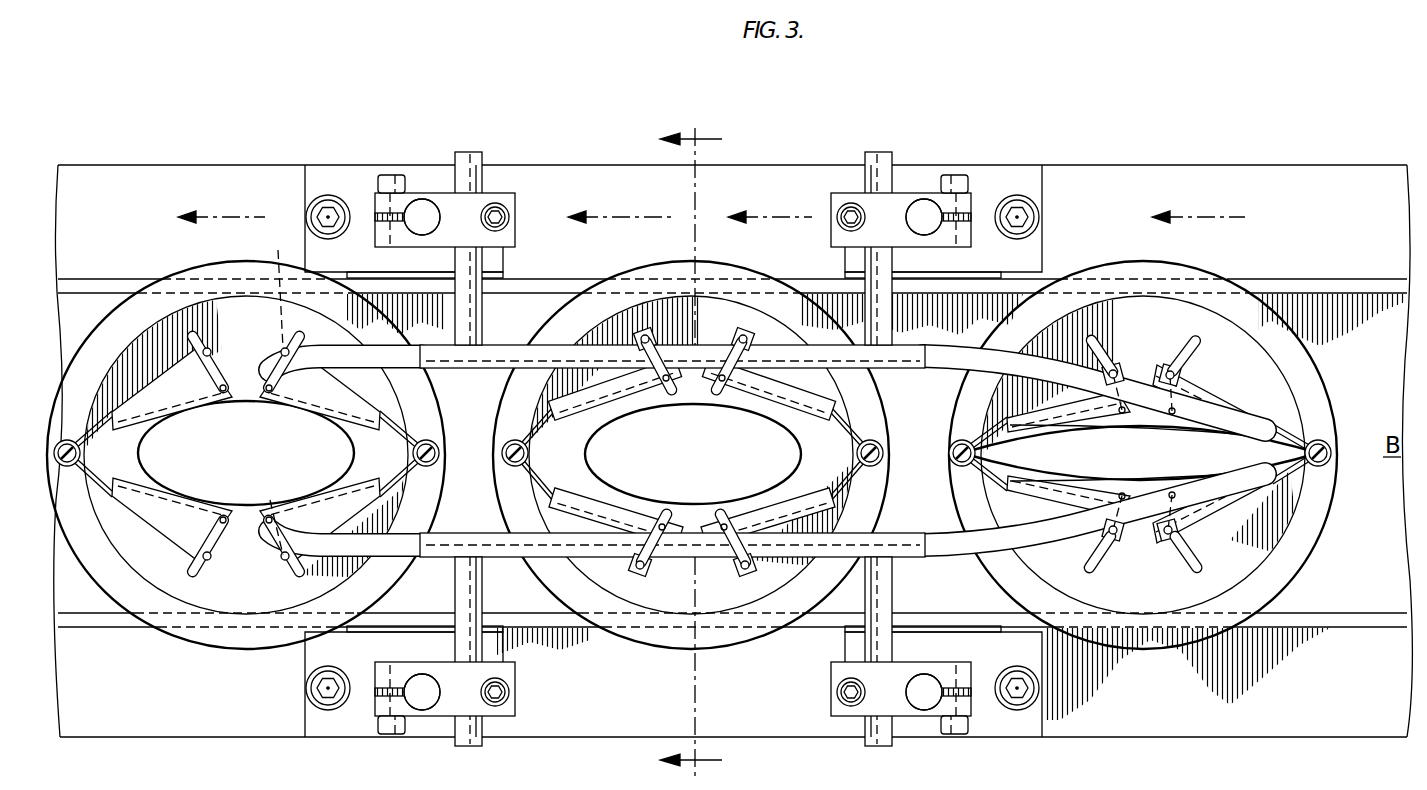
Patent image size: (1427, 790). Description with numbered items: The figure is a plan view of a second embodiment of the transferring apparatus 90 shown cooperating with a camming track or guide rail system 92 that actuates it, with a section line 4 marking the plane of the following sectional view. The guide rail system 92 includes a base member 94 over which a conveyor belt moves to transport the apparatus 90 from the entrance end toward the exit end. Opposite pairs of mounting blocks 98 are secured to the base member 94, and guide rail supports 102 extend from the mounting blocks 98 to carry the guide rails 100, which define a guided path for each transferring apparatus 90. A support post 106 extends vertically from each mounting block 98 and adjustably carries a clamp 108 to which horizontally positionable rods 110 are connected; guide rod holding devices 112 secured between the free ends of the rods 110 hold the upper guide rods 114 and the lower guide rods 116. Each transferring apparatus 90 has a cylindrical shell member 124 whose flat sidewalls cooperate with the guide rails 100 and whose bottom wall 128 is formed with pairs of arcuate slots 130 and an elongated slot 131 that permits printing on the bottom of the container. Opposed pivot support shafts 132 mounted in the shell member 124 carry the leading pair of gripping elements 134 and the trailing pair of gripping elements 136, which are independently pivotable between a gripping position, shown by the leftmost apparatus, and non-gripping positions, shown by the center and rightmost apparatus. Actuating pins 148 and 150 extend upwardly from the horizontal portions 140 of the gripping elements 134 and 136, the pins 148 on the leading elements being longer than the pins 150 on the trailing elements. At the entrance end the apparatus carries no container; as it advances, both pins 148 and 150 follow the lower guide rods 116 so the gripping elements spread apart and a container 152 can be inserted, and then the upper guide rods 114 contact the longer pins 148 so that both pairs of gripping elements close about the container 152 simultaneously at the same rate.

The section line 4- 4 is at (684, 454).
The transferring apparatus 90 is at (719, 452).
The guide rail system 92 is at (733, 416).
The base member 94 is at (1272, 165).
The mounting blocks 98 is at (1012, 167).
The guide rails 100 is at (1345, 300).
The guide rail supports 102 is at (360, 275).
The support post 106 is at (422, 210).
The clamp 108 is at (512, 196).
The horizontally positionable rods 110 is at (483, 305).
The guide rod holding devices 112 is at (492, 318).
The upper guide rods 114 is at (252, 358).
The lower guide rods 116 is at (290, 372).
The cylindrical shell member 124 is at (80, 352).
The bottom wall 128 is at (121, 565).
The arcuate slots 130 is at (198, 343).
The elongated slot 131 is at (136, 480).
The pivot support shafts 132 is at (510, 442).
The leading gripping elements 134 is at (147, 380).
The trailing gripping elements 136 is at (380, 410).
The horizontal portions 140 is at (818, 393).
The actuating pins 148 is at (211, 353).
The actuating pins 150 is at (729, 418).
The container 152 is at (160, 520).